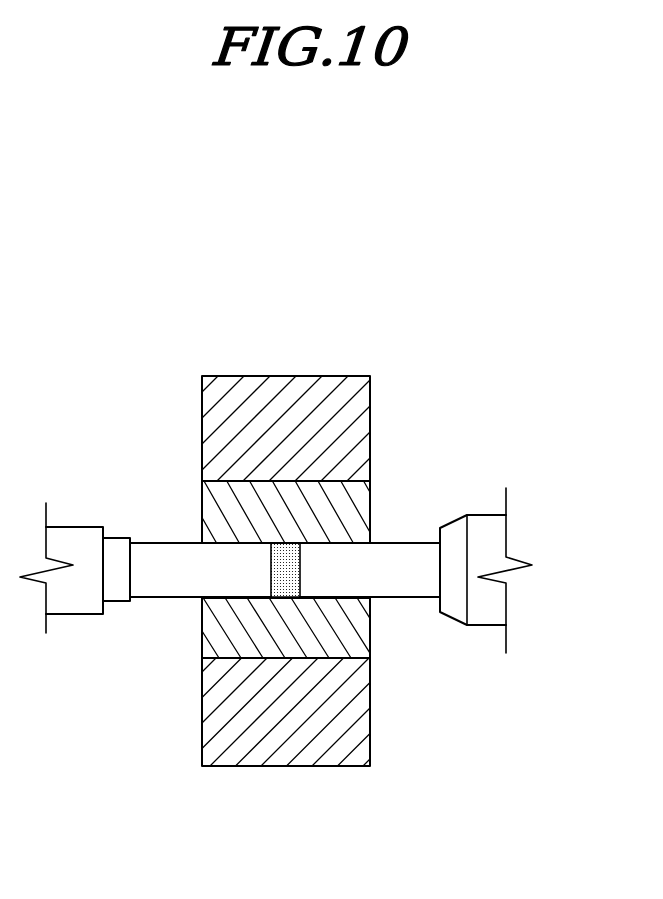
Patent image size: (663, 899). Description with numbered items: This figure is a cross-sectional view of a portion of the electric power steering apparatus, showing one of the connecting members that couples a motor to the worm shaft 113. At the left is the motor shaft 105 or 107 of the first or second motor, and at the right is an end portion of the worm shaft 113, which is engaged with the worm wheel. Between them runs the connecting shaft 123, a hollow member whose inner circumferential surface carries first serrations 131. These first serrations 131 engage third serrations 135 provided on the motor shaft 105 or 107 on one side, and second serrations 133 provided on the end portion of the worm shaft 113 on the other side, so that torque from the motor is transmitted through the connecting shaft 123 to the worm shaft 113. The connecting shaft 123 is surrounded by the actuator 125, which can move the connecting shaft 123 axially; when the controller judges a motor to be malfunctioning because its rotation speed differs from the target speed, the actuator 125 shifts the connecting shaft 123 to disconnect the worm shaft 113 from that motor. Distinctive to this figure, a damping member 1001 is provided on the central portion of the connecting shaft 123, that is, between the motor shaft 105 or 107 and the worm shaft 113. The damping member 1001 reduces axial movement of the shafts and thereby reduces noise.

The actuator 125 is at (285, 397).
The connecting shaft 123 is at (358, 504).
The first serrations 131 is at (217, 549).
The damping member 1001 is at (278, 573).
The third serrations 135 is at (170, 599).
The second serrations 133 is at (397, 598).
The motor shaft 105 is at (75, 543).
The motor shaft 107 is at (74, 538).
The worm shaft 113 is at (490, 537).